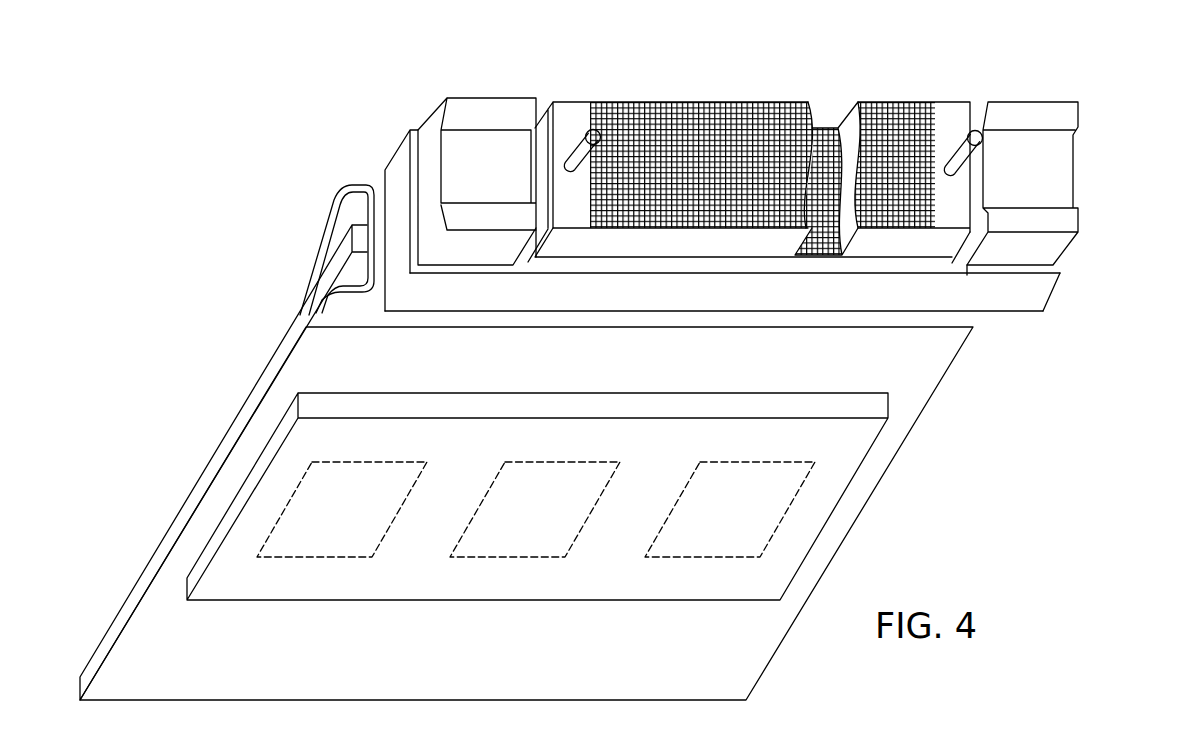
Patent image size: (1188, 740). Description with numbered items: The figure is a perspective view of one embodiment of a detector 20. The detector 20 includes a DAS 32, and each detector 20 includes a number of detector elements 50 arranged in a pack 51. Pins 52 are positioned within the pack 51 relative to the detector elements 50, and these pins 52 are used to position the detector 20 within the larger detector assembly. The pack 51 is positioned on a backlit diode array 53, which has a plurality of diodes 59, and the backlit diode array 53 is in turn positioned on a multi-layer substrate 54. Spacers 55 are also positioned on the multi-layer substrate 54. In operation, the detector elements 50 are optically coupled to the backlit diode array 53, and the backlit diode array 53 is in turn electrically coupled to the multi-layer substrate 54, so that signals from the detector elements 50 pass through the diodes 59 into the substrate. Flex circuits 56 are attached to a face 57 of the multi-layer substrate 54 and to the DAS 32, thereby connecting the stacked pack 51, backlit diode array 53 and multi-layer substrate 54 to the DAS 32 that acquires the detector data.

The detector 20 is at (987, 78).
The DAS 32 is at (873, 470).
The detector elements 50 is at (668, 112).
The pack 51 is at (588, 86).
The pins 52 is at (583, 130).
The backlit diode array 53 is at (952, 290).
The multi-layer substrate 54 is at (1043, 295).
The spacers 55 is at (485, 100).
The flex circuits 56 is at (321, 280).
The face 57 is at (384, 173).
The diodes 59 is at (829, 128).